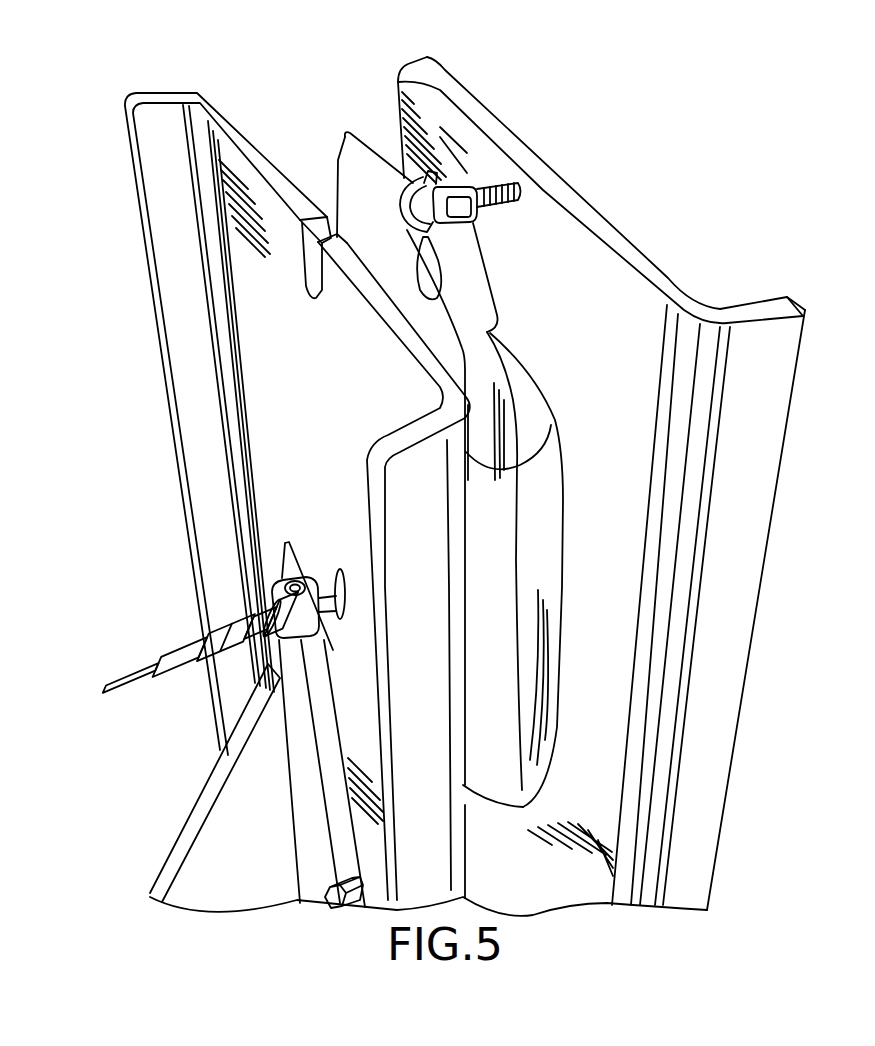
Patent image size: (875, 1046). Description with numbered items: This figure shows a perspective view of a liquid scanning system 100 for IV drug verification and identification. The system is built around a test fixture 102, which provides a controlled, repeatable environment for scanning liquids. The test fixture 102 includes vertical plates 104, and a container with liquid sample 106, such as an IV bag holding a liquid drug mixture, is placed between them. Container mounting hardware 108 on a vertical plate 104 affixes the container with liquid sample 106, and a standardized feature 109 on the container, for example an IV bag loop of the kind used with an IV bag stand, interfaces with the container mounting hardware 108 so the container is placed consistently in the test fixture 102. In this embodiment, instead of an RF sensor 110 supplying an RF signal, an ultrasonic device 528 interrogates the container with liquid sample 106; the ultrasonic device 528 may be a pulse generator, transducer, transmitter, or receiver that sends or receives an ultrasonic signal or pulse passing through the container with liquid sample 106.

The liquid scanning system 100 is at (777, 113).
The test fixture 102 is at (582, 167).
The vertical plate 104 is at (196, 128).
The container with liquid sample 106 is at (524, 605).
The container mounting hardware 108 is at (490, 188).
The standardized feature 109 is at (410, 183).
The RF sensor 110 is at (347, 130).
The ultrasonic (US) device 528 is at (227, 633).